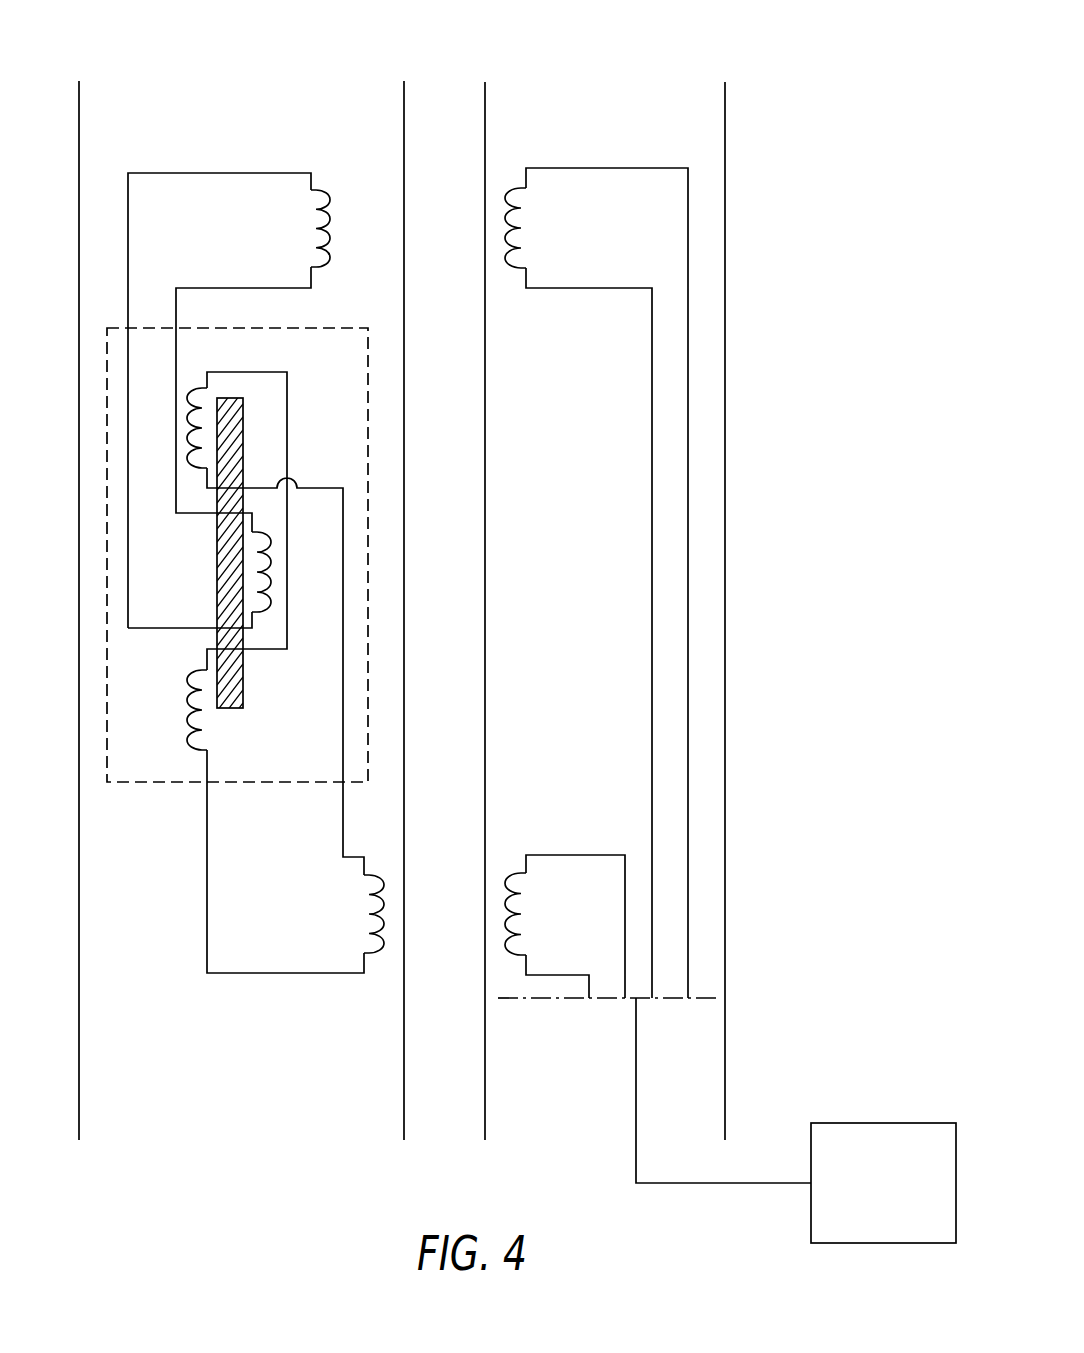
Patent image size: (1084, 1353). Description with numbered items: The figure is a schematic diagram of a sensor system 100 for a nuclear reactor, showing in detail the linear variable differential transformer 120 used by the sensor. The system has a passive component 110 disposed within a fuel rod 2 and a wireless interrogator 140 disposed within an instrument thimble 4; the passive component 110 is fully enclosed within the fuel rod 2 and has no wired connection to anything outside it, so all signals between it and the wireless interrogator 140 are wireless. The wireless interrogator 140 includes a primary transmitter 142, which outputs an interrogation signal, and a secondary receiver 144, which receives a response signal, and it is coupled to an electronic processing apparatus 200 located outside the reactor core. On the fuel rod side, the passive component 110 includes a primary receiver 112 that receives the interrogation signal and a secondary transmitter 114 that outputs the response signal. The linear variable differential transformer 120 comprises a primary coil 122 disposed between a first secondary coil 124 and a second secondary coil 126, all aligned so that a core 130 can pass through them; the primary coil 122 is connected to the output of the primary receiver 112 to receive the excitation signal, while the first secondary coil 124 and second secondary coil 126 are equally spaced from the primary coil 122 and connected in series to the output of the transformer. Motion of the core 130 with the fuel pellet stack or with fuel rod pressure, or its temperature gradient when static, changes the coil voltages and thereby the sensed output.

The sensor system 100 is at (97, 25).
The fuel rod 2 is at (79, 108).
The instrument thimble 4 is at (725, 233).
The passive component 110 is at (183, 143).
The primary receiver 112 is at (328, 201).
The secondary transmitter 114 is at (371, 915).
The linear variable differential transformer 120 is at (178, 782).
The primary coil 122 is at (269, 572).
The first secondary coil 124 is at (186, 421).
The second secondary coil 126 is at (185, 700).
The core 130 is at (243, 676).
The wireless interrogator 140 is at (606, 142).
The primary transmitter 142 is at (520, 222).
The secondary receiver 144 is at (522, 917).
The electronic processing apparatus 200 is at (866, 1243).